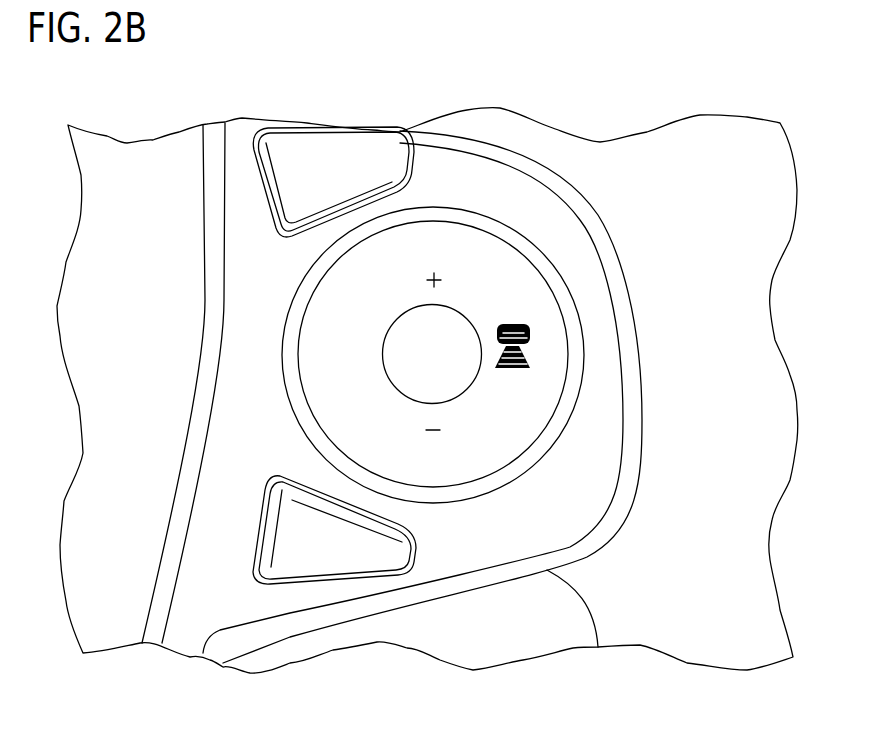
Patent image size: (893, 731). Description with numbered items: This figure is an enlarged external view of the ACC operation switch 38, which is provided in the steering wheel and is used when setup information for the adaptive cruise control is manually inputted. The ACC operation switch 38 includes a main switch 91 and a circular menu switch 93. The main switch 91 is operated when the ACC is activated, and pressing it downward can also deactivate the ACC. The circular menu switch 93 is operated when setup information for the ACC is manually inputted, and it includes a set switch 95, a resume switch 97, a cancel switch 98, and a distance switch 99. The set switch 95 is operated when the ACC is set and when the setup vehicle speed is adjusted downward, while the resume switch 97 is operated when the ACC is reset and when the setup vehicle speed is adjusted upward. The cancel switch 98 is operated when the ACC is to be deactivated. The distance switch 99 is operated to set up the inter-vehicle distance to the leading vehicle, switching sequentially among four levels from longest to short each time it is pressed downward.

The ACC operation switch 38 is at (516, 196).
The main switch 91 is at (291, 151).
The circular menu switch 93 is at (555, 284).
The set switch 95 is at (437, 470).
The resume switch 97 is at (444, 232).
The cancel switch 98 is at (433, 377).
The distance switch 99 is at (532, 342).